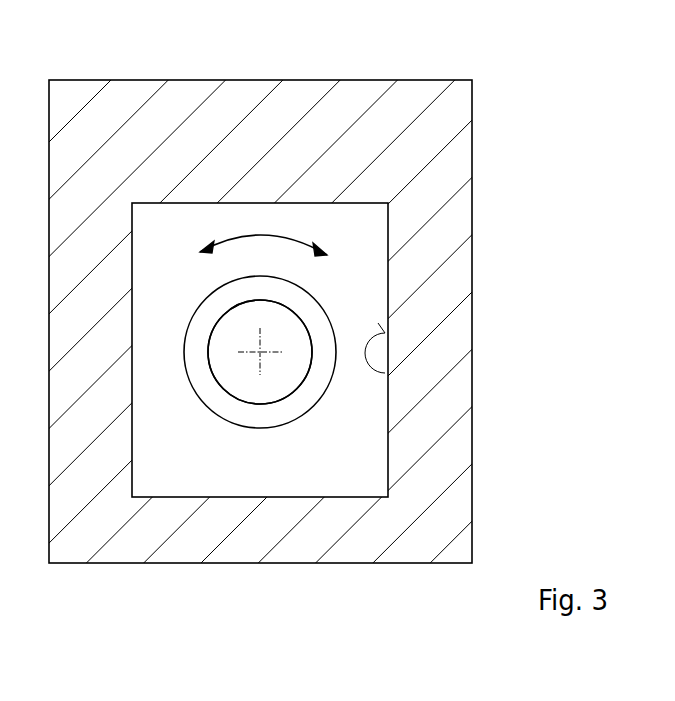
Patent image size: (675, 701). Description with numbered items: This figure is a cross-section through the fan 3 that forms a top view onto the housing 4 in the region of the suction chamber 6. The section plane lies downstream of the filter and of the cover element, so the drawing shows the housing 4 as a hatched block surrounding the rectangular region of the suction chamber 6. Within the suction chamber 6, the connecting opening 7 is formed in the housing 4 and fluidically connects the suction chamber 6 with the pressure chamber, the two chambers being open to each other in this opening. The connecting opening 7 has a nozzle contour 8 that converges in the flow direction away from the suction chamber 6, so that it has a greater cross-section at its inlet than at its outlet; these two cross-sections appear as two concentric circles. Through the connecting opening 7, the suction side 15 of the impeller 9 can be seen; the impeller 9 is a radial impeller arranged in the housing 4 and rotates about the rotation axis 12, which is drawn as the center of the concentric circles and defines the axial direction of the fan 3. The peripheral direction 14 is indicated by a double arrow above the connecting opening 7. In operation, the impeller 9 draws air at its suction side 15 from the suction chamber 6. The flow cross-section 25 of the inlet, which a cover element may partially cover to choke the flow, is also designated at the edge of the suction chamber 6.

The fan 3 is at (337, 350).
The housing 4 is at (472, 247).
The suction chamber 6 is at (179, 302).
The connecting opening 7 is at (245, 379).
The nozzle contour 8 is at (227, 407).
The impeller 9 is at (247, 384).
The rotation axis 12 is at (262, 350).
The peripheral direction 14 is at (263, 234).
The suction side 15 is at (292, 378).
The flow cross-section 25 is at (385, 373).